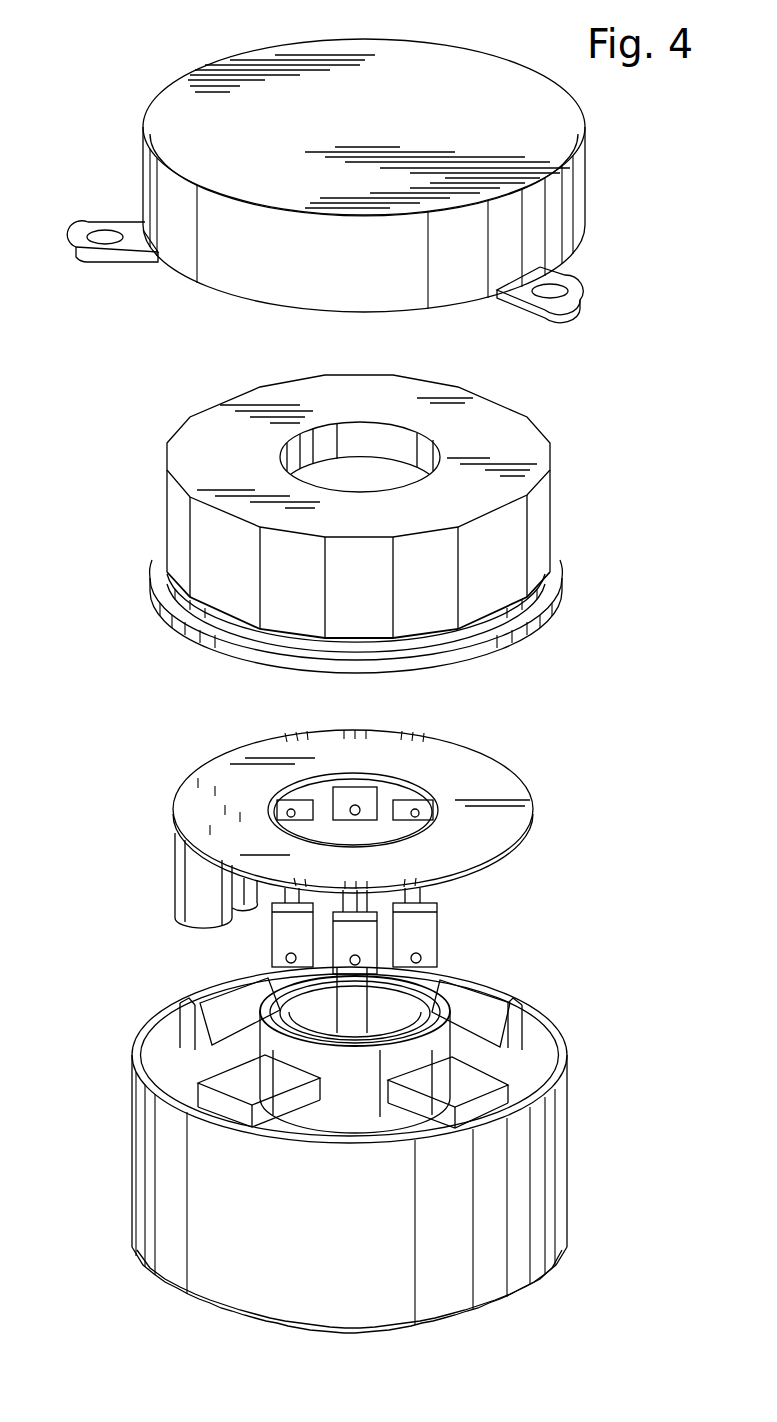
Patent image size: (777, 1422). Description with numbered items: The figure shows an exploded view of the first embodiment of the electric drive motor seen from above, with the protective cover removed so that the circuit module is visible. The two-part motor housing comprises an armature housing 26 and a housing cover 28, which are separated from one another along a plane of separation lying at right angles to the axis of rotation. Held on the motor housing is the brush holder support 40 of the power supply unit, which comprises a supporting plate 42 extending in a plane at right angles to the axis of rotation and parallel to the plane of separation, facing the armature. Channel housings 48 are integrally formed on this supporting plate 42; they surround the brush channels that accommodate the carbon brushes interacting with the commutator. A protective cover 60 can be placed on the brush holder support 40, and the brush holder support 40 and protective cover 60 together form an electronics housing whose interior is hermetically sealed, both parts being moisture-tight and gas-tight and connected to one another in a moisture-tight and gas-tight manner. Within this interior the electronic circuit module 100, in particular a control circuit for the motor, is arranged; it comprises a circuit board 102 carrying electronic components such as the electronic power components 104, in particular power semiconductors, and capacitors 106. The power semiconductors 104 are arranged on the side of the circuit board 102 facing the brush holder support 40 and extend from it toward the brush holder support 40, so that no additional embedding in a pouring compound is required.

The housing cover 28 is at (175, 117).
The protective cover 60 is at (162, 436).
The electronic circuit module 100 is at (336, 849).
The circuit board 102 is at (493, 783).
The electronic power components 104 is at (287, 928).
The capacitors 106 is at (188, 887).
The armature housing 26 is at (351, 1141).
The brush holder support 40 is at (253, 1042).
The supporting plate 42 is at (507, 1065).
The channel housings 48 is at (480, 995).